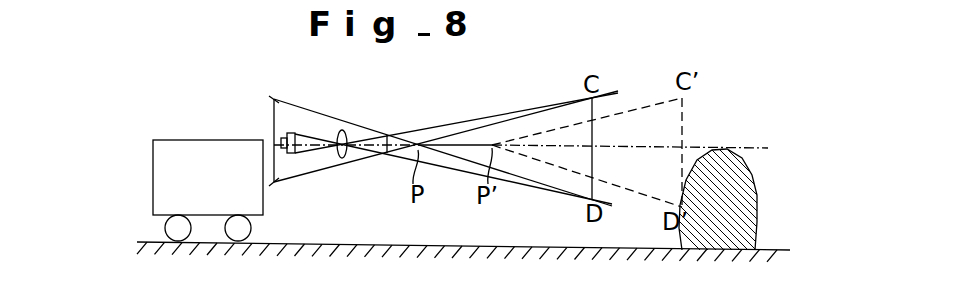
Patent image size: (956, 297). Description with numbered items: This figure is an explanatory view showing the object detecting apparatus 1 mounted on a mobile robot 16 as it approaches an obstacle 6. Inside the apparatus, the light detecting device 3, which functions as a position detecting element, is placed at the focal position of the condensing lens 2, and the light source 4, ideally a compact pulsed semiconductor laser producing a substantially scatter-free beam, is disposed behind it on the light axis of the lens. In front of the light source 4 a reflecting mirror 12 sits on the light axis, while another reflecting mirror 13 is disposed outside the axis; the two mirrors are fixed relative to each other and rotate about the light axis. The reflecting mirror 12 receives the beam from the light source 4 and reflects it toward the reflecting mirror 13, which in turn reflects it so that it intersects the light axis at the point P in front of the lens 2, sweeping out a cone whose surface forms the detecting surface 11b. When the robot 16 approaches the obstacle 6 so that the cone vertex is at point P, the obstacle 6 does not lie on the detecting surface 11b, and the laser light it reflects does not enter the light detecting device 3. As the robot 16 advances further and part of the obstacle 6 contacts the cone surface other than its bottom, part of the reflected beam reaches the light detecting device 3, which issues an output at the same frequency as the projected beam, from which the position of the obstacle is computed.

The optical projection system 1 is at (401, 113).
The optical system (condensing lens) 2 is at (344, 130).
The light detecting device 3 is at (293, 133).
The light source 4 is at (287, 150).
The obstacle 6 is at (746, 203).
The detecting surface 11b is at (472, 131).
The reflecting mirror 12 is at (272, 144).
The reflecting mirror 13 is at (273, 99).
The mobile robot 16 is at (162, 163).